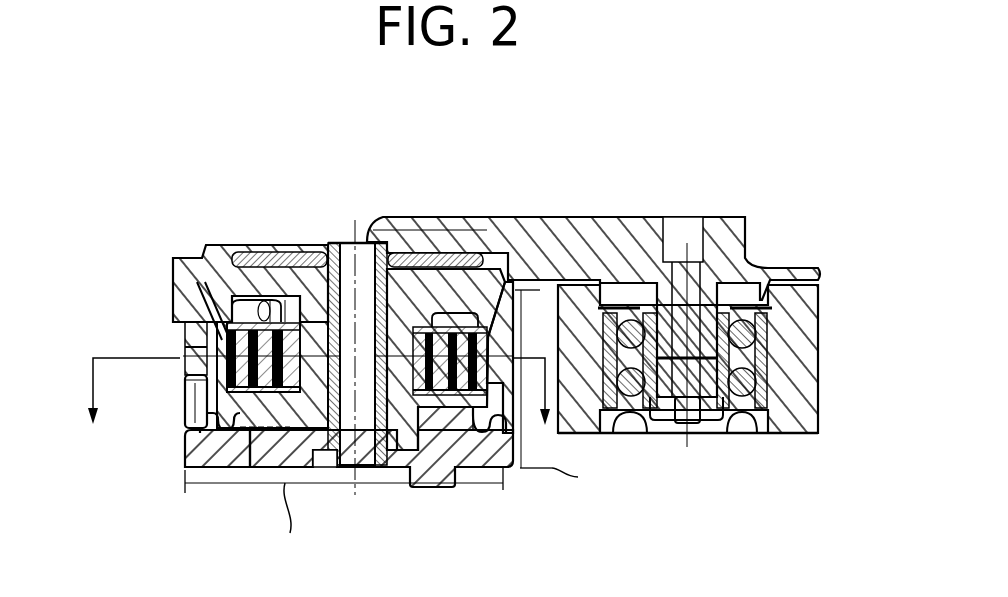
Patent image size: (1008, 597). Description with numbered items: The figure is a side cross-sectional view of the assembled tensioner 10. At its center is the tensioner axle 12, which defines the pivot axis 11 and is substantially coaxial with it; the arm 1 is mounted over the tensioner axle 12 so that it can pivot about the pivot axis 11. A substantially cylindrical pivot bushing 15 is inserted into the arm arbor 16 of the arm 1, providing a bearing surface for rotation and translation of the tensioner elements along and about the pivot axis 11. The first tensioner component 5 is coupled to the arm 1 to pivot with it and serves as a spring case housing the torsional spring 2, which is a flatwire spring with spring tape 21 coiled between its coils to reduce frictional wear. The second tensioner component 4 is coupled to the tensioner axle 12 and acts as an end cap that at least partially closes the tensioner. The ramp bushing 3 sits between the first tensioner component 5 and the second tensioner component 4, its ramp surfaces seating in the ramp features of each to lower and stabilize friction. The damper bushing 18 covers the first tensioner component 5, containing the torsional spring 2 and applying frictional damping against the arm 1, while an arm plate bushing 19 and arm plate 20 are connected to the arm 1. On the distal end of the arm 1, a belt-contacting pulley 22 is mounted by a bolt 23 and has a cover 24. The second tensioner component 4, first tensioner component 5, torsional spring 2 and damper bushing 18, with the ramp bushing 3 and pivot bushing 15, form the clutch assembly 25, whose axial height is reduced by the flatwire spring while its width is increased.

The arm 1 is at (598, 222).
The torsional spring 2 is at (508, 470).
The ramp bushing 3 is at (248, 467).
The second tensioner component 4 is at (220, 453).
The first tensioner component 5 is at (190, 397).
The tensioner 10 is at (641, 148).
The pivot axis 11 is at (357, 495).
The tensioner axle 12 is at (330, 458).
The pivot bushing 15 is at (413, 447).
The arm arbor 16 is at (318, 335).
The damper bushing 18 is at (197, 343).
The arm plate bushing 19 is at (222, 243).
The arm plate 20 is at (287, 250).
The spring tape 21 is at (187, 347).
The pulley 22 is at (820, 392).
The bolt 23 is at (710, 433).
The cover 24 is at (667, 430).
The clutch assembly 25 is at (172, 381).